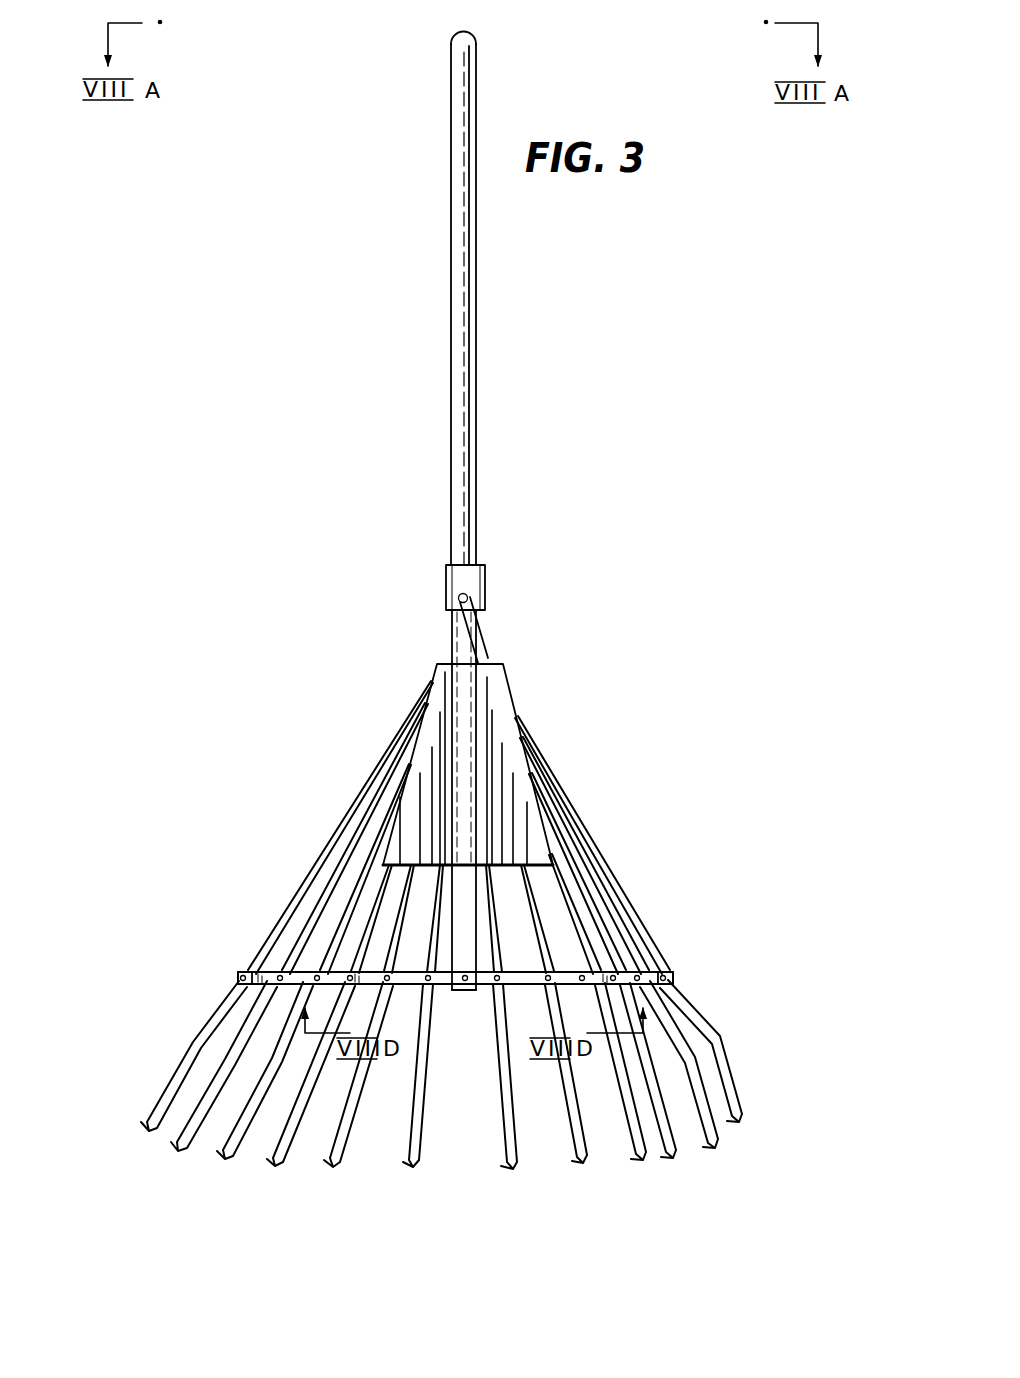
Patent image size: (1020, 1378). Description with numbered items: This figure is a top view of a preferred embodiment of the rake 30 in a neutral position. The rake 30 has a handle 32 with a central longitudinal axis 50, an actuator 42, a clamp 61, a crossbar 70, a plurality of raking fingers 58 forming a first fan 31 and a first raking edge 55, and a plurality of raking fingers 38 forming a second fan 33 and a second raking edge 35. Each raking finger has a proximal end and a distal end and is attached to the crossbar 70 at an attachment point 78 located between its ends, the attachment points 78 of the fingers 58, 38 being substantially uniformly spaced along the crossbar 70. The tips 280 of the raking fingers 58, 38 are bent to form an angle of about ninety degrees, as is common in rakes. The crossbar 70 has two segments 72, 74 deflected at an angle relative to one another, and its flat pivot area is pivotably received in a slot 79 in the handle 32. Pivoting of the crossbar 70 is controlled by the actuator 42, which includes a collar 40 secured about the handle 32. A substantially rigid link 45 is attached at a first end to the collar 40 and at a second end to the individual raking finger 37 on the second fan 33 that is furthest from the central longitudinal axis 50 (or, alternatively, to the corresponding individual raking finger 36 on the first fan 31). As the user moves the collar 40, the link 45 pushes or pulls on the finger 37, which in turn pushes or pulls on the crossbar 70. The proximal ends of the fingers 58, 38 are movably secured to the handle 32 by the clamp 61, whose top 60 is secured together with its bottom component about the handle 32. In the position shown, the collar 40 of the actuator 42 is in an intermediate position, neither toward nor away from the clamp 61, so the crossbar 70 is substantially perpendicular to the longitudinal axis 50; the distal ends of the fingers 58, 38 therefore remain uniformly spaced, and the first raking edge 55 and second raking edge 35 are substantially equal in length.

The rake 30 is at (527, 130).
The first fan 31 is at (296, 888).
The handle 32 is at (478, 242).
The second fan 33 is at (627, 881).
The second raking edge 35 is at (567, 1164).
The individual raking finger 36 is at (228, 998).
The individual raking finger 37 is at (728, 1076).
The raking fingers 38 is at (638, 1164).
The collar 40 is at (487, 592).
The actuator 42 is at (441, 622).
The link 45 is at (487, 642).
The central longitudinal axis 50 is at (460, 23).
The first raking edge 55 is at (263, 1178).
The raking fingers 58 is at (170, 1152).
The top of clamp 60 is at (514, 686).
The clamp 61 is at (374, 749).
The crossbar 70 is at (681, 964).
The crossbar segment 72 is at (675, 979).
The crossbar segment 74 is at (238, 972).
The attachment point 78 is at (317, 973).
The slot 79 is at (463, 990).
The tips 280 is at (730, 1130).